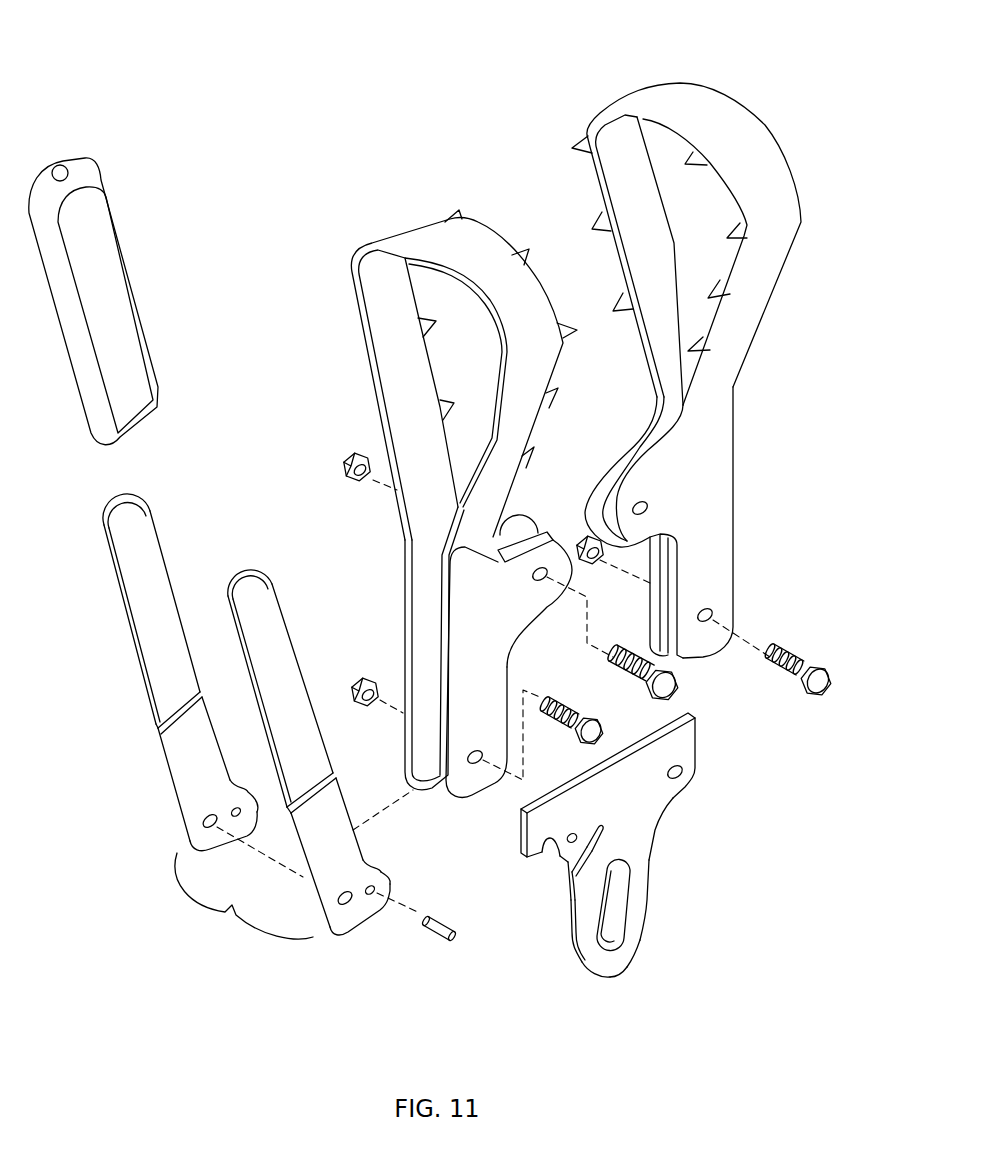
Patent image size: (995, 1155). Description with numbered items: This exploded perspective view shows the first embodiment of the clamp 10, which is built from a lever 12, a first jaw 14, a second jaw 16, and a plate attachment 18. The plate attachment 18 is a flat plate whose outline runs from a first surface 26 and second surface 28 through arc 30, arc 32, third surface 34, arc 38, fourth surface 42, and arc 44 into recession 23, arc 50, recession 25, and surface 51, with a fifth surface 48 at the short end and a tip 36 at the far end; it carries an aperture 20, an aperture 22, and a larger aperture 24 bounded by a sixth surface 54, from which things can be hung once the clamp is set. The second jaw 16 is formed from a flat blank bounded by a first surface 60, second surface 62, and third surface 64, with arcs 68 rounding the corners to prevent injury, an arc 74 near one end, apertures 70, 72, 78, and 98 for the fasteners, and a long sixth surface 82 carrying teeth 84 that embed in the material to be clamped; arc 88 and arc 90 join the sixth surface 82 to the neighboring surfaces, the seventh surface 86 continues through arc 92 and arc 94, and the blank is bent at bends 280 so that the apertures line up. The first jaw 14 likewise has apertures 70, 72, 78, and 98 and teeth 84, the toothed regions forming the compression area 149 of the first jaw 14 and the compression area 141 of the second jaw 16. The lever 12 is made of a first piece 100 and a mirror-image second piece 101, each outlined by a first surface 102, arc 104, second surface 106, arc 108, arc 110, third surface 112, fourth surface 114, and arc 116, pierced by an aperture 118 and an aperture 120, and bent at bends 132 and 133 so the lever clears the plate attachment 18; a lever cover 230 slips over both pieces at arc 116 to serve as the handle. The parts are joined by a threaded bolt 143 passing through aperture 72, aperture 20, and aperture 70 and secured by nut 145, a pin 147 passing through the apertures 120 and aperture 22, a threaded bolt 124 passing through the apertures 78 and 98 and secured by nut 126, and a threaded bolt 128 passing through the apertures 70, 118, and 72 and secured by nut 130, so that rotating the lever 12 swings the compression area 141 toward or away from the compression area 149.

The clamp 10 is at (130, 72).
The lever 12 is at (244, 900).
The first jaw 14 is at (352, 223).
The second jaw 16 is at (568, 95).
The plate attachment 18 is at (734, 733).
The aperture 20 is at (683, 772).
The aperture 22 is at (578, 835).
The recession 23 is at (603, 830).
The aperture 24 is at (604, 910).
The recession 25 is at (547, 855).
The first surface 26 is at (650, 733).
The second surface 28 is at (700, 737).
The arc 30 is at (687, 788).
The arc 32 is at (660, 820).
The third surface 34 is at (651, 887).
The tip 36 is at (603, 980).
The arc 38 is at (641, 943).
The fourth surface 42 is at (570, 927).
The arc 44 is at (570, 887).
The fifth surface 48 is at (519, 840).
The arc 50 is at (567, 863).
The surface 51 is at (530, 863).
The sixth surface 54 is at (604, 930).
The first surface 60 is at (703, 653).
The second surface 62 is at (456, 797).
The third surface 64 is at (369, 374).
The arcs 68 is at (400, 772).
The aperture 70 is at (481, 750).
The aperture 72 is at (717, 610).
The arc 74 is at (518, 634).
The aperture 78 is at (547, 580).
The sixth surface 82 is at (492, 231).
The teeth 84 is at (458, 212).
The seventh surface 86 is at (643, 466).
The arc 88 is at (510, 560).
The arc 90 is at (675, 428).
The arc 92 is at (628, 560).
The arc 94 is at (660, 568).
The aperture 98 is at (652, 506).
The first piece 100 is at (263, 573).
The second piece 101 is at (137, 497).
The first surface 102 is at (120, 604).
The arc 104 is at (183, 847).
The second surface 106 is at (363, 920).
The arc 108 is at (394, 876).
The arc 110 is at (369, 860).
The third surface 112 is at (217, 738).
The fourth surface 114 is at (160, 548).
The arc 116 is at (120, 499).
The aperture 118 is at (215, 830).
The aperture 120 is at (240, 812).
The threaded bolt 124 is at (613, 663).
The nut 126 is at (350, 457).
The threaded bolt 128 is at (572, 727).
The nut 130 is at (355, 683).
The bend 132 is at (202, 692).
The bend 133 is at (153, 727).
The compression area 141 is at (783, 247).
The threaded bolt 143 is at (817, 663).
The nut 145 is at (586, 530).
The pin 147 is at (433, 928).
The compression area 149 is at (541, 393).
The lever cover 230 is at (133, 286).
The bends 280 is at (447, 520).